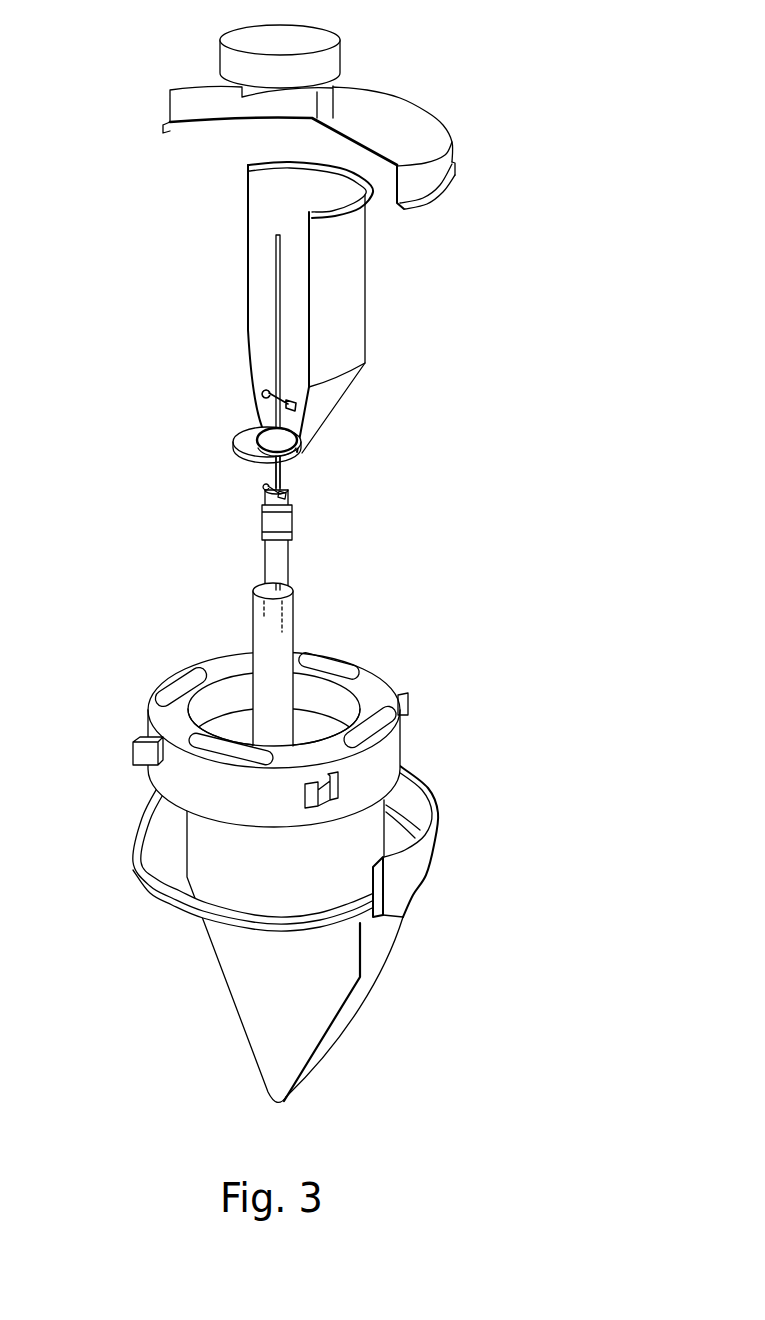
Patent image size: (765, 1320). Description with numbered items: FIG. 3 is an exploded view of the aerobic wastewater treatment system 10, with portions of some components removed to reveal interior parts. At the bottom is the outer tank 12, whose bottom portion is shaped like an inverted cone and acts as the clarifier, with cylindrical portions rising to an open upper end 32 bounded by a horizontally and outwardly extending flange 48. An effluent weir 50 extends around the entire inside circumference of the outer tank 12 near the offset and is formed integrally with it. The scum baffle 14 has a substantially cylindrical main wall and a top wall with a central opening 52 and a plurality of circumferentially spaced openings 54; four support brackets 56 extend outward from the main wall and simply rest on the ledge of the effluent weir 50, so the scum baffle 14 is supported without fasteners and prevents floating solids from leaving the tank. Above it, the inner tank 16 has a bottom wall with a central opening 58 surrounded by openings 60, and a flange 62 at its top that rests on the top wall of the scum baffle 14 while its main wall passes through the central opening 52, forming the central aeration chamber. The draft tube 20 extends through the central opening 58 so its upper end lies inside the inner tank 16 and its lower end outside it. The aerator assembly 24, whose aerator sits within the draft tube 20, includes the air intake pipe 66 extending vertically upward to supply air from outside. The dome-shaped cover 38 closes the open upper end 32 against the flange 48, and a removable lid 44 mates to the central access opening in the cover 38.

The aerobic wastewater treatment system 10 is at (493, 543).
The outer tank 12 is at (406, 915).
The scum baffle 14 is at (250, 709).
The inner tank 16 is at (340, 307).
The draft tube 20 is at (298, 622).
The aerator assembly 24 is at (292, 522).
The open upper end 32 is at (410, 793).
The cover 38 is at (433, 105).
The lid 44 is at (343, 63).
The flange 48 is at (433, 829).
The effluent weir 50 is at (172, 908).
The central opening 52 is at (225, 690).
The openings 54 is at (170, 690).
The support brackets 56 is at (133, 750).
The central opening 58 is at (297, 458).
The openings 60 is at (247, 436).
The flange 62 is at (372, 193).
The air intake pipe 66 is at (274, 265).